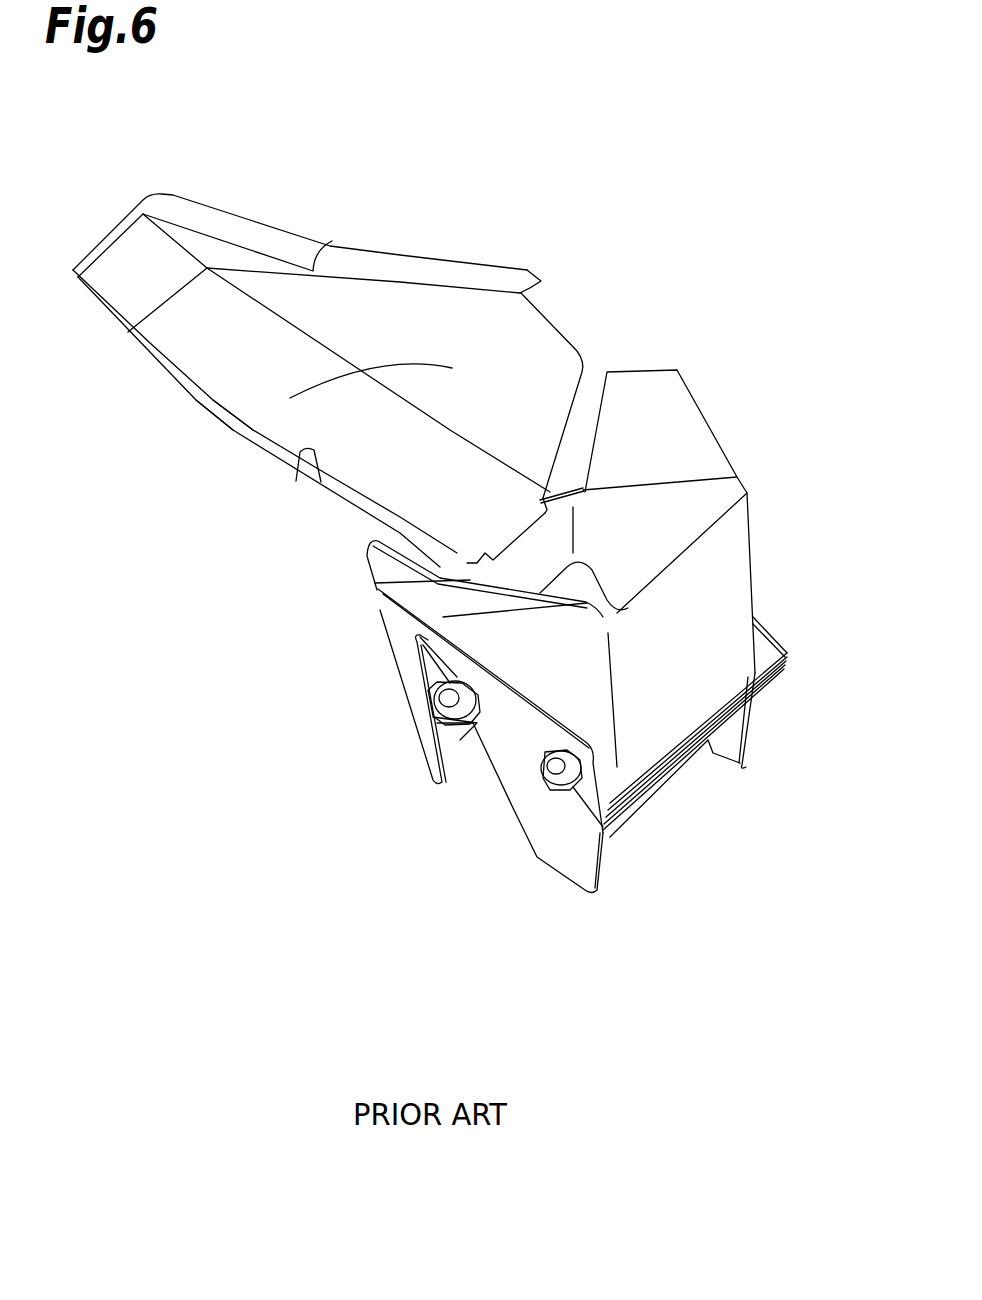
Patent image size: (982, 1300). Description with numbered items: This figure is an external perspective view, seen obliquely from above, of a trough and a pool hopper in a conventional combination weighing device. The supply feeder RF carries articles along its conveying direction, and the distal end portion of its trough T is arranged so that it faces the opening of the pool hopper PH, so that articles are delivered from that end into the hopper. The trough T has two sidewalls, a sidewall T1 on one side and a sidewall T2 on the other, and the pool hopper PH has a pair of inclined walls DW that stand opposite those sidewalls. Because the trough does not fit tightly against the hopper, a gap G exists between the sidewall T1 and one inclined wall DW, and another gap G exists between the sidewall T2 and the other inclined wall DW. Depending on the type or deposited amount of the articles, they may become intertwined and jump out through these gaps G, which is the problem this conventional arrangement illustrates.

The supply feeder RF is at (358, 322).
The trough T is at (157, 440).
The sidewall T1 is at (290, 398).
The sidewall T2 is at (297, 462).
The inclined wall DW is at (661, 425).
The gap G is at (533, 477).
The pool hopper PH is at (766, 556).